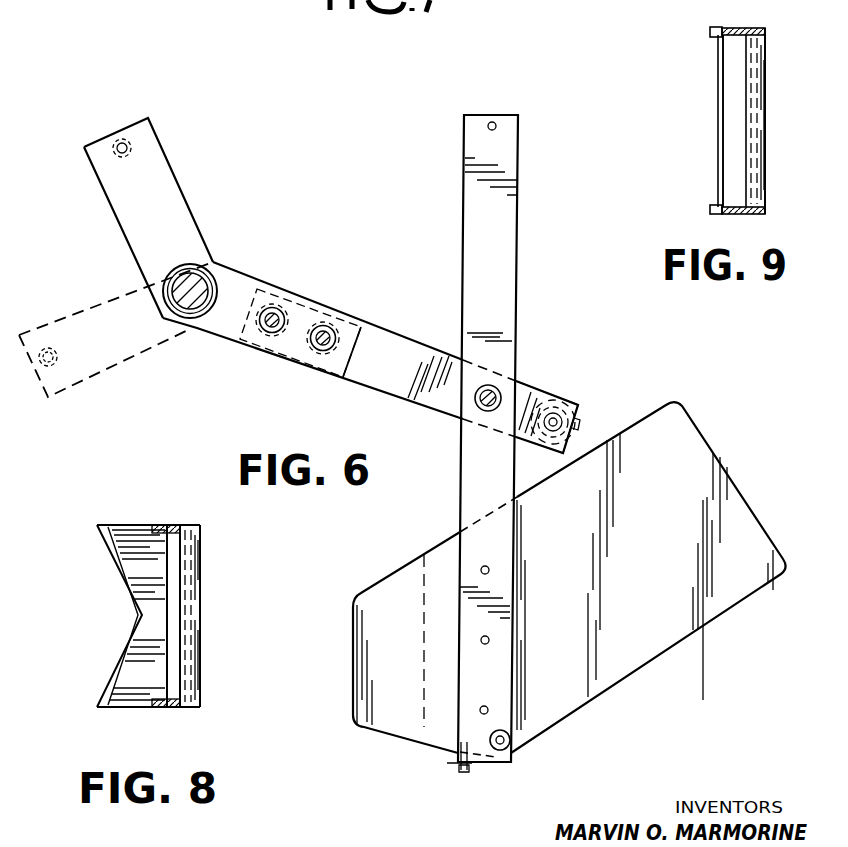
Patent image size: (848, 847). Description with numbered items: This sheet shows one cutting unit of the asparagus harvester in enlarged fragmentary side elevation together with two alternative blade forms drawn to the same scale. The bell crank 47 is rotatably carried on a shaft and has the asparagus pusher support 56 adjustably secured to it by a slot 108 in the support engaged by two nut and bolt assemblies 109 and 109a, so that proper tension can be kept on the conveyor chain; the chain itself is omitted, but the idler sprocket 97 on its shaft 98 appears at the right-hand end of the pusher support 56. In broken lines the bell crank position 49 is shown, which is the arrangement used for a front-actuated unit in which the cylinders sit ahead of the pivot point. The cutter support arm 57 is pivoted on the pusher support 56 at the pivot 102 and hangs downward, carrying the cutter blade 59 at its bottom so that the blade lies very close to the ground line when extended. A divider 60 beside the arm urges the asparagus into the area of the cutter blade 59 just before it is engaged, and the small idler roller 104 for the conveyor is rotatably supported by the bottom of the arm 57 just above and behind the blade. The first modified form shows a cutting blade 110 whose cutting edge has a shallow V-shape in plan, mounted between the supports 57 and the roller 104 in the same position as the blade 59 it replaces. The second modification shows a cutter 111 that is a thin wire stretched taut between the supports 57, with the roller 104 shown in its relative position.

In FIG. 6, the bell crank 47 is at (160, 162).
In FIG. 6, the bell crank 49 is at (93, 372).
In FIG. 6, the pusher support member 56 is at (398, 348).
In FIG. 6, the cutter support arm 57 is at (505, 252).
In FIG. 8, the cutter support arm 57 is at (175, 710).
In FIG. 9, the cutter support arm 57 is at (733, 211).
In FIG. 6, the cutter blade 59 is at (452, 767).
In FIG. 6, the divider 60 is at (387, 588).
In FIG. 6, the idler sprocket 97 is at (578, 420).
In FIG. 6, the shaft 98 is at (555, 415).
In FIG. 6, the pivot 102 is at (490, 408).
In FIG. 6, the idler roller 104 is at (496, 757).
In FIG. 8, the idler roller 104 is at (202, 598).
In FIG. 9, the idler roller 104 is at (765, 97).
In FIG. 6, the slot 108 is at (293, 321).
In FIG. 6, the nut and bolt assembly 109 is at (270, 333).
In FIG. 6, the nut and bolt assembly 109a is at (325, 350).
In FIG. 8, the modified cutting blade 110 is at (130, 557).
In FIG. 9, the wire cutter 111 is at (717, 122).